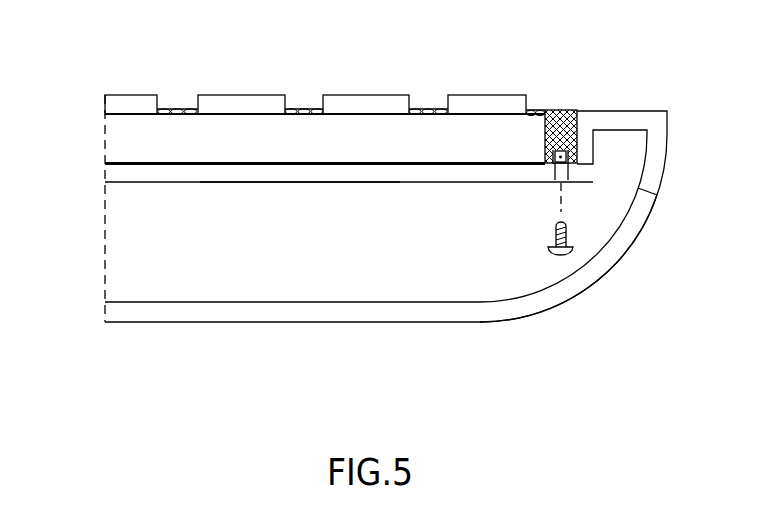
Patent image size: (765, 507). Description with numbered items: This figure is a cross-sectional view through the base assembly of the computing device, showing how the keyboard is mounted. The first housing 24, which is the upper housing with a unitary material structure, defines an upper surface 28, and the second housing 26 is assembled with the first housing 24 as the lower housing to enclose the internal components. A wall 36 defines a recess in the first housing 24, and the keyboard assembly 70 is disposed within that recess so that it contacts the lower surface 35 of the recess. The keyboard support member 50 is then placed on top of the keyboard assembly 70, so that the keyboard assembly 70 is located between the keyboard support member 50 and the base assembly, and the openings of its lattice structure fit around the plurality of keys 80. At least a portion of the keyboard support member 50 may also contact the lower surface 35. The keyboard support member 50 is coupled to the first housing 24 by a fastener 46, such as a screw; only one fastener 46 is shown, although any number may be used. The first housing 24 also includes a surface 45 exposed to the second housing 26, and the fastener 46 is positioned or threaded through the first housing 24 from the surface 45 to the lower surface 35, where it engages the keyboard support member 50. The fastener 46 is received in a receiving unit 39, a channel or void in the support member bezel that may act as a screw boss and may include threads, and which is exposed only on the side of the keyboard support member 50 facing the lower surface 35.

The keys 80 is at (128, 99).
The keyboard support member 50 is at (182, 108).
The keyboard assembly 70 is at (125, 132).
The lower surface 35 is at (147, 162).
The first housing 24 is at (200, 172).
The surface 45 is at (265, 183).
The wall 36 is at (560, 110).
The receiving unit 39 is at (573, 153).
The upper surface 28 is at (637, 110).
The second housing 26 is at (583, 280).
The fastener 46 is at (567, 235).